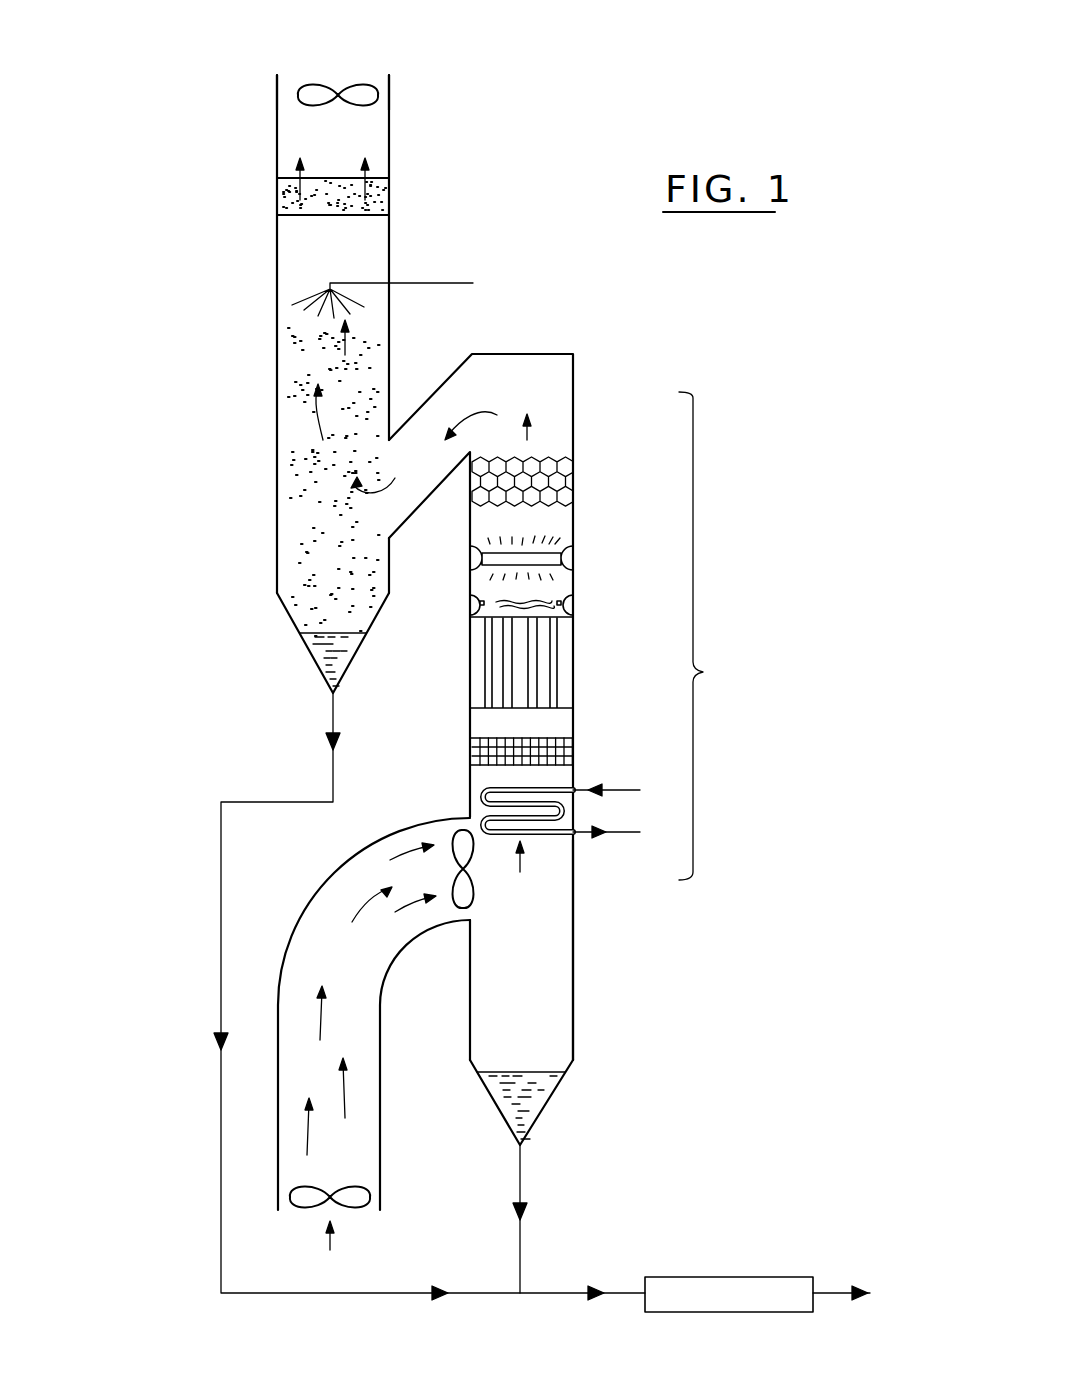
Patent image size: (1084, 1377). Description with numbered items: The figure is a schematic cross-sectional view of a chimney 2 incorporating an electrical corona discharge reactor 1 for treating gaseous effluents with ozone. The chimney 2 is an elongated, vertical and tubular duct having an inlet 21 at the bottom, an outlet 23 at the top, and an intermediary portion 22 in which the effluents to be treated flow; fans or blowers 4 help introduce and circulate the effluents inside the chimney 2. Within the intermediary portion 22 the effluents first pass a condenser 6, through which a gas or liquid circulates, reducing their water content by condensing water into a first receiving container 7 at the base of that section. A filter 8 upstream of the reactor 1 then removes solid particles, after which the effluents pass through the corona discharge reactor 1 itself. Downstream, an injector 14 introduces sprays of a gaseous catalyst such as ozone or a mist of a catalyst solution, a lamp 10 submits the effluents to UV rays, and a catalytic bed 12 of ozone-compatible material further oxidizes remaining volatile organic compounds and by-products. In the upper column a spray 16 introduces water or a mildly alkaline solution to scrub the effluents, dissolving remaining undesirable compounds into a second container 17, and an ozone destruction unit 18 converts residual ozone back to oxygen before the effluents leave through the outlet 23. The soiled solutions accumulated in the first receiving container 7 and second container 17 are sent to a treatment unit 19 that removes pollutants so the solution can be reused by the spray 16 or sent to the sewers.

The electrical corona discharge reactor 1 is at (566, 658).
The chimney 2 is at (207, 238).
The fan 4 is at (368, 98).
The condenser 6 is at (573, 876).
The first receiving container 7 is at (547, 1108).
The filter 8 is at (573, 747).
The lamp 10 is at (568, 558).
The catalytic bed 12 is at (565, 468).
The injector 14 is at (570, 607).
The spray 16 is at (370, 283).
The second container 17 is at (305, 660).
The ozone destruction unit 18 is at (393, 197).
The treatment unit 19 is at (757, 1294).
The inlet 21 is at (302, 1222).
The intermediary portion 22 is at (574, 707).
The outlet 23 is at (352, 72).